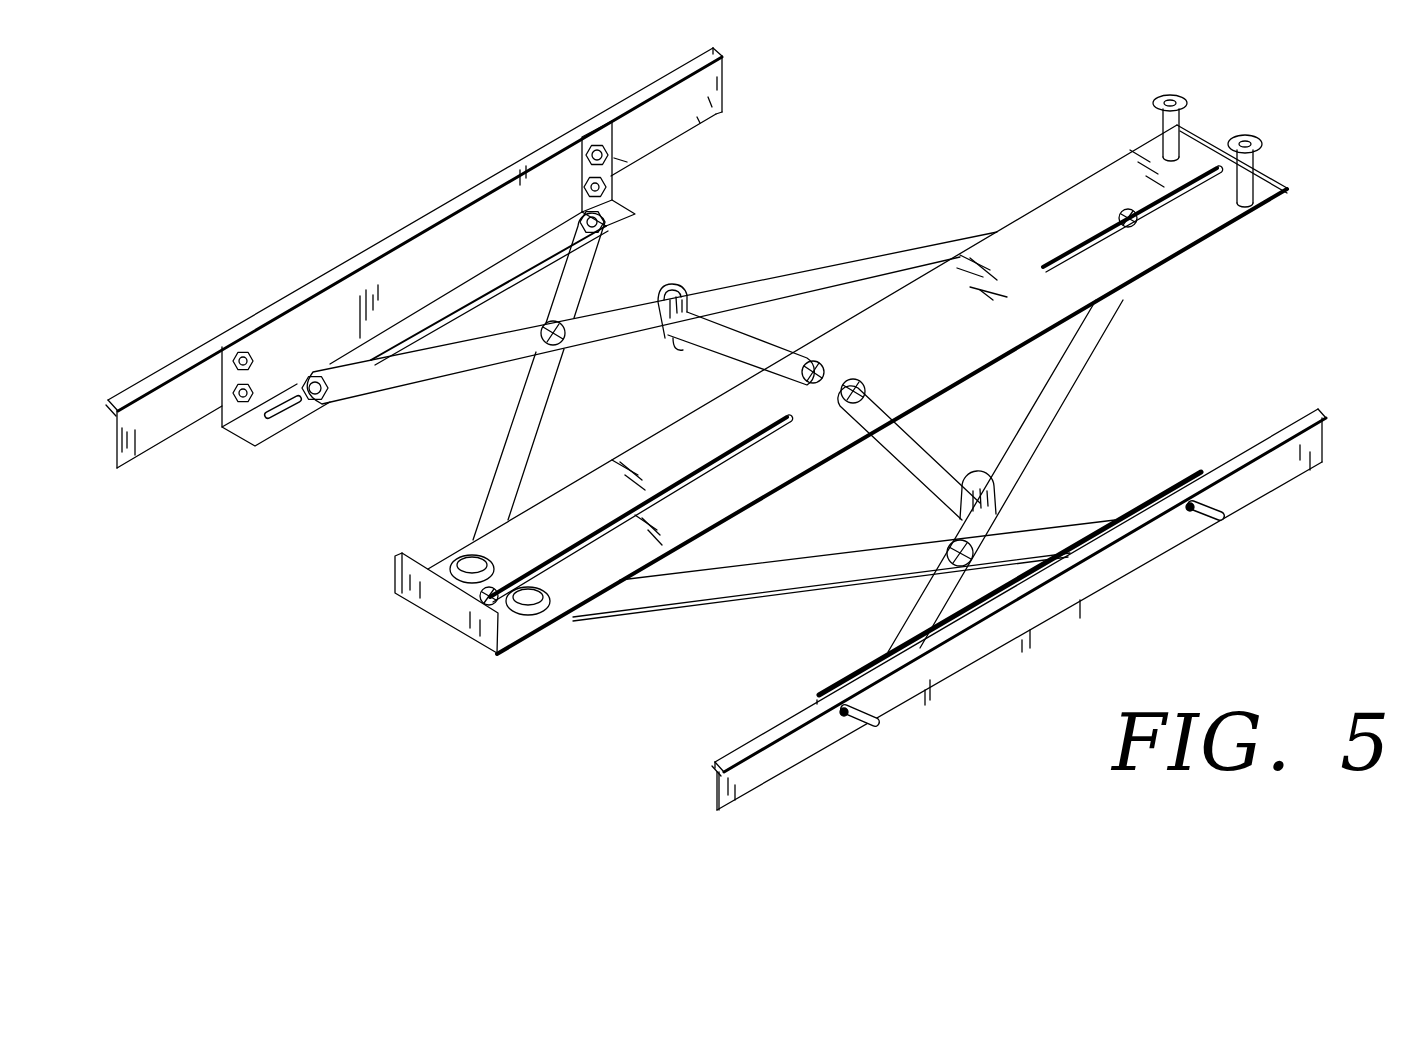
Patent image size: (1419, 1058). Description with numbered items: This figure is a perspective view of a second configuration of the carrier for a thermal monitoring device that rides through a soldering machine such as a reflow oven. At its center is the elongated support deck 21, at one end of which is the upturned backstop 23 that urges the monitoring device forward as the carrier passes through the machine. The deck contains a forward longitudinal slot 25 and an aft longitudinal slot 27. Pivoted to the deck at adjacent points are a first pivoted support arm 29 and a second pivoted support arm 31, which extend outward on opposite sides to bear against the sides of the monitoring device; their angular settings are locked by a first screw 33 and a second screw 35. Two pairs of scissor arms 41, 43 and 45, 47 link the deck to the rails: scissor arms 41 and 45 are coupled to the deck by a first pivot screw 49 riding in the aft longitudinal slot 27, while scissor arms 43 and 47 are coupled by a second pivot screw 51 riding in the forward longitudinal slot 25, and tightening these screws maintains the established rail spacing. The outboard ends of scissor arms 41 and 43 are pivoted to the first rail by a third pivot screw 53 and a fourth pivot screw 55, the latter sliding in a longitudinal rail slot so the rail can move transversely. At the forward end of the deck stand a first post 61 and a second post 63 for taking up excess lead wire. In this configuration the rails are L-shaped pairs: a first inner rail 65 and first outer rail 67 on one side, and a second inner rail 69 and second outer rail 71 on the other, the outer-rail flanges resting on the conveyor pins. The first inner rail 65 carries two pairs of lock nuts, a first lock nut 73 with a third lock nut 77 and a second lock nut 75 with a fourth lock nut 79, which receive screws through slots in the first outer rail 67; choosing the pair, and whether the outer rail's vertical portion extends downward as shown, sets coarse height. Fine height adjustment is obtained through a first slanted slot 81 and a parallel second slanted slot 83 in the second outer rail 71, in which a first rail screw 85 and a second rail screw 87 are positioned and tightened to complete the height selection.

The elongated support deck 21 is at (871, 389).
The upturned backstop 23 is at (418, 603).
The forward longitudinal slot 25 is at (1107, 179).
The aft longitudinal slot 27 is at (641, 559).
The first pivoted support arm 29 is at (647, 329).
The second pivoted support arm 31 is at (904, 453).
The first screw 33 is at (736, 354).
The second screw 35 is at (924, 406).
The scissor arm 41 is at (504, 376).
The scissor arm 43 is at (652, 275).
The scissor arm 45 is at (844, 597).
The scissor arm 47 is at (1050, 476).
The first pivot screw 49 is at (510, 664).
The second pivot screw 51 is at (1127, 137).
The third pivot screw 53 is at (638, 198).
The fourth pivot screw 55 is at (329, 432).
The first post 61 is at (1213, 111).
The second post 63 is at (1294, 159).
The first inner rail 65 is at (265, 441).
The first outer rail 67 is at (393, 258).
The second inner rail 69 is at (1020, 609).
The second outer rail 71 is at (679, 790).
The first lock nut 73 is at (234, 311).
The second lock nut 75 is at (211, 437).
The third lock nut 77 is at (590, 106).
The fourth lock nut 79 is at (644, 194).
The first slanted slot 81 is at (902, 743).
The second slanted slot 83 is at (1069, 588).
The first rail screw 85 is at (859, 774).
The second rail screw 87 is at (1220, 558).